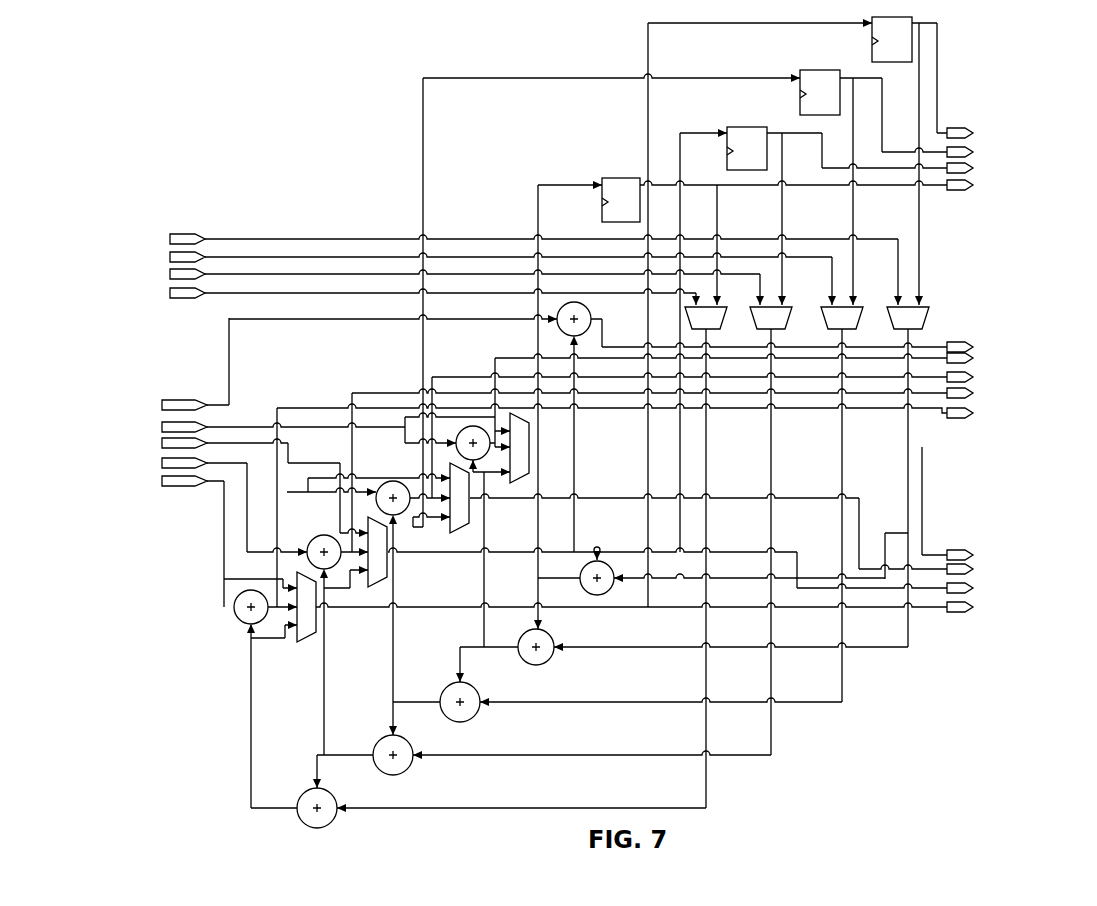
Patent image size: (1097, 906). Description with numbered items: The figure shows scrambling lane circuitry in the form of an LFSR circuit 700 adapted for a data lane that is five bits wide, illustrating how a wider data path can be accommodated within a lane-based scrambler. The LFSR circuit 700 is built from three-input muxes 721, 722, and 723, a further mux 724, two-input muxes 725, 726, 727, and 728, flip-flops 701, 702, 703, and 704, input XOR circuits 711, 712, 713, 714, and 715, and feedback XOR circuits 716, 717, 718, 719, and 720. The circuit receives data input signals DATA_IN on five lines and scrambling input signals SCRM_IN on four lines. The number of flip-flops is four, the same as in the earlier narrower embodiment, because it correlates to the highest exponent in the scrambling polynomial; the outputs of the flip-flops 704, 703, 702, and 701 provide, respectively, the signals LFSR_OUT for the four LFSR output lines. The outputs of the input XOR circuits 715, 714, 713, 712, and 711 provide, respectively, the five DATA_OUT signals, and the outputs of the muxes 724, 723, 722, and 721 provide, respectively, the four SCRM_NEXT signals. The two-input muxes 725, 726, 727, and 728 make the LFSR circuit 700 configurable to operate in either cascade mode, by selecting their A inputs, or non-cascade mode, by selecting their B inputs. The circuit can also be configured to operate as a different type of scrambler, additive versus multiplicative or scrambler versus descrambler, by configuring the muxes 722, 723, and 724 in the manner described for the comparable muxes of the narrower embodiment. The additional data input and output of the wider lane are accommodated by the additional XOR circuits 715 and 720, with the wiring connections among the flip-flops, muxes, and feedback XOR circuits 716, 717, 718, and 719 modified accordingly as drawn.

The LFSR circuit 700 is at (574, 420).
The flip-flop 701 is at (621, 200).
The flip-flop 702 is at (747, 148).
The flip-flop 703 is at (820, 92).
The flip-flop 704 is at (892, 39).
The input XOR circuit 711 is at (238, 620).
The input XOR circuit 712 is at (312, 538).
The input XOR circuit 713 is at (378, 486).
The input XOR circuit 714 is at (468, 425).
The input XOR circuit 715 is at (559, 330).
The feedback XOR circuit 716 is at (319, 829).
The feedback XOR circuit 717 is at (400, 775).
The feedback XOR circuit 718 is at (470, 716).
The feedback XOR circuit 719 is at (538, 666).
The feedback XOR circuit 720 is at (598, 597).
The 3-input mux 721 is at (322, 626).
The 3-input mux 722 is at (390, 560).
The 3-input mux 723 is at (470, 508).
The mux 724 is at (519, 448).
The 2-input mux 725 is at (691, 327).
The 2-input mux 726 is at (788, 310).
The 2-input mux 727 is at (851, 306).
The 2-input mux 728 is at (926, 305).